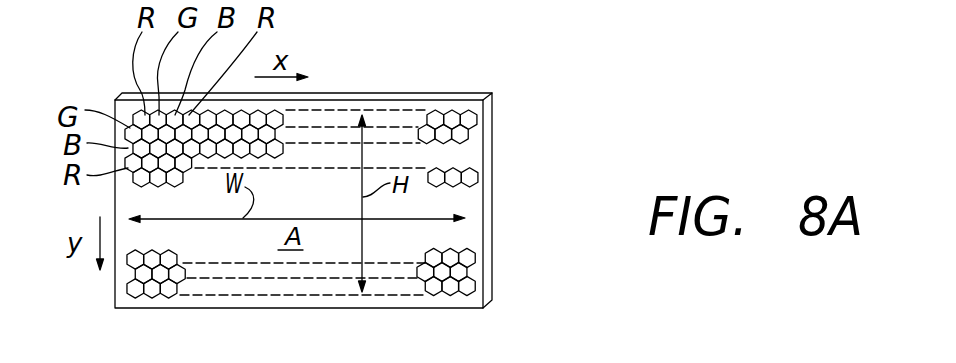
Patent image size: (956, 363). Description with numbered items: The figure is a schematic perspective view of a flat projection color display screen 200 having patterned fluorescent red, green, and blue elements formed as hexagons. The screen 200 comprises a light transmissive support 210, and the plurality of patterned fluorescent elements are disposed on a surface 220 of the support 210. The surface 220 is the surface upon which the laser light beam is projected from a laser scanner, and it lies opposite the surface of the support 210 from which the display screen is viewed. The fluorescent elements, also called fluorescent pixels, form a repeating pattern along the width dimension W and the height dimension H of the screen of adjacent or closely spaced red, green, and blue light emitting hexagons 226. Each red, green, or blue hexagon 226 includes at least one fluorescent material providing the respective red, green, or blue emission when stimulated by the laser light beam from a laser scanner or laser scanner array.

The flat projection color display screen 200 is at (513, 102).
The light transmissive support 210 is at (494, 240).
The surface 220 is at (475, 147).
The red, green, and blue light emitting hexagons 226 is at (472, 265).